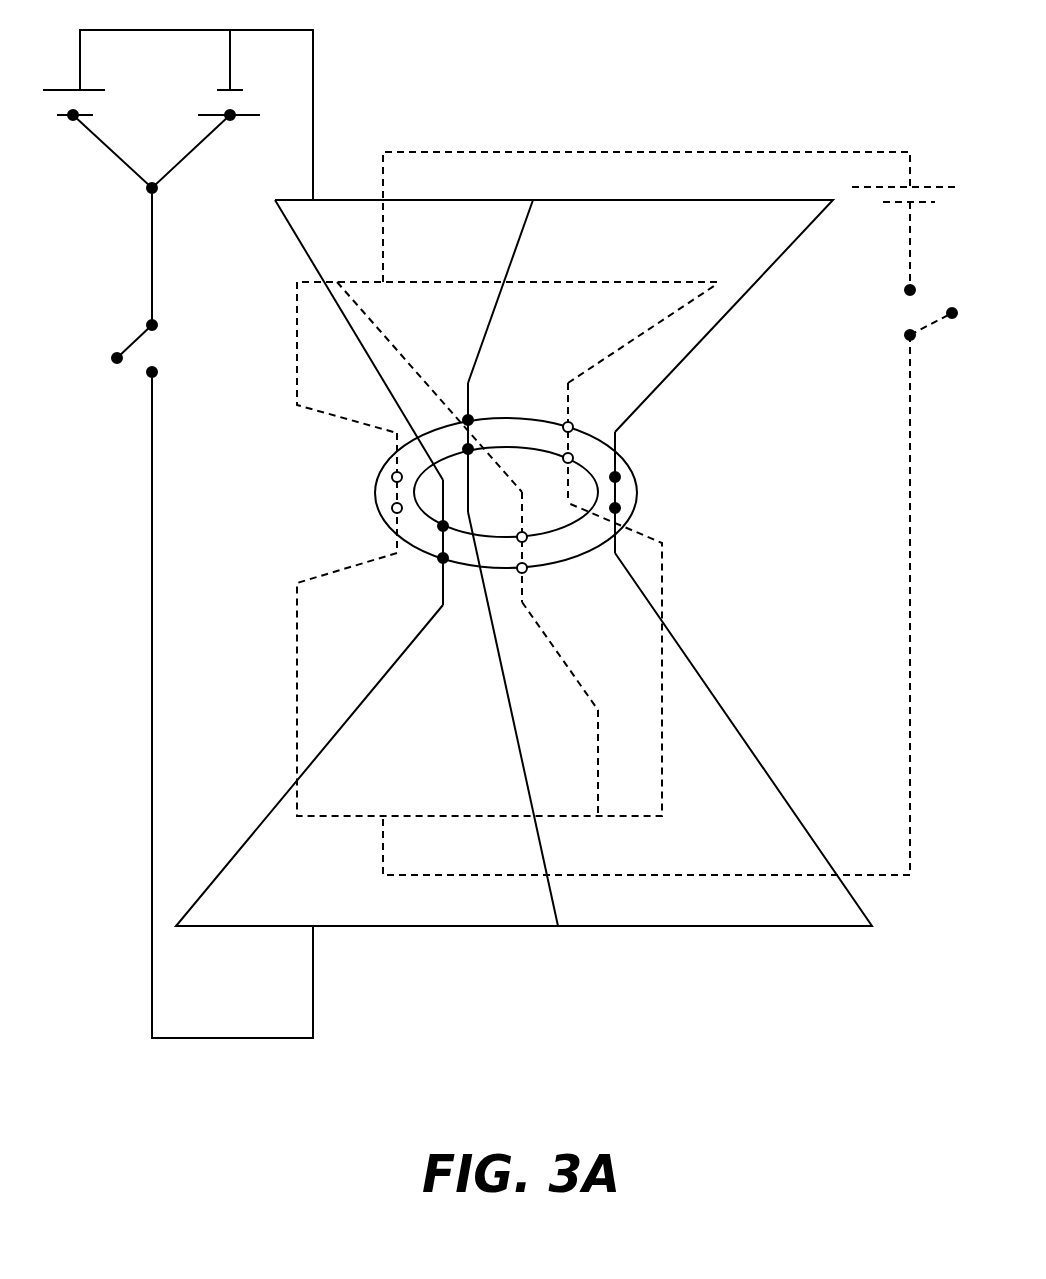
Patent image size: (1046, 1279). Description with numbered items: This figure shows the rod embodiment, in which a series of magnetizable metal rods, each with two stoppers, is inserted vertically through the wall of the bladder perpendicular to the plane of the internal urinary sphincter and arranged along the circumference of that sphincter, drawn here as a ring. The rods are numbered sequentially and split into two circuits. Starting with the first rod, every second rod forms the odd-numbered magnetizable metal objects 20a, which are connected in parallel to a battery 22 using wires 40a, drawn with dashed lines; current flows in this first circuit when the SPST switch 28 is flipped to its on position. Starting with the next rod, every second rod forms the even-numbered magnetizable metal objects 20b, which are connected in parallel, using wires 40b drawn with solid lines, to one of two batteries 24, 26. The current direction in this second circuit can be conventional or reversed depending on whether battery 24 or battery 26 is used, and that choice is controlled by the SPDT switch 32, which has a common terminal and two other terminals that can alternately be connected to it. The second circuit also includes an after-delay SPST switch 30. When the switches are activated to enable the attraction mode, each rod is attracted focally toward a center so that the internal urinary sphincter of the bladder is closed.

The odd-numbered magnetizable metal objects 20a is at (572, 412).
The even-numbered magnetizable metal objects 20b is at (470, 390).
The battery 22 is at (870, 187).
The battery 2 24 is at (85, 112).
The battery 3 26 is at (247, 112).
The SPST switch 28 is at (930, 327).
The after-delay SPST switch 30 is at (130, 340).
The SPDT switch 32 is at (110, 152).
The wires 40a is at (655, 327).
The wires 40b is at (315, 268).